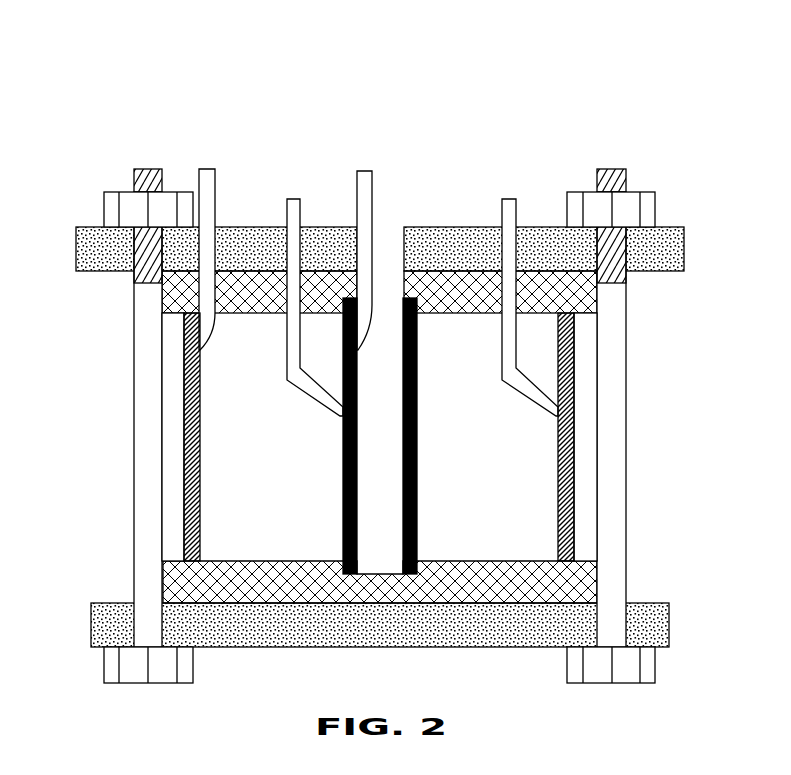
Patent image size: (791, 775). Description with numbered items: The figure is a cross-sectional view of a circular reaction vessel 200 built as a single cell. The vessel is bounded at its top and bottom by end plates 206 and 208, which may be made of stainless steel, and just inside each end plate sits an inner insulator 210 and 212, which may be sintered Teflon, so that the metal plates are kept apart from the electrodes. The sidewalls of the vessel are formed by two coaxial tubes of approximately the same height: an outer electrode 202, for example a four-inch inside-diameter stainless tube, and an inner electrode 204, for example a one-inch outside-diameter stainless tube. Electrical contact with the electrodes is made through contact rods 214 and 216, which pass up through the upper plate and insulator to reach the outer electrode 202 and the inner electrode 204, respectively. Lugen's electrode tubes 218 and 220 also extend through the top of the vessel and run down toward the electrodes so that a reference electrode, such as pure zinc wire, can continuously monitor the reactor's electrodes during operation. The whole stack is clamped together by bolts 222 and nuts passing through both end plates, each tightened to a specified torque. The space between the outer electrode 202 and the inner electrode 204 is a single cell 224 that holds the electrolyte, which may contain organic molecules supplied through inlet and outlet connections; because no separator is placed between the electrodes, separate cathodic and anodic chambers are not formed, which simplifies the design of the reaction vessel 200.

The circular reaction vessel 200 is at (205, 76).
The outer electrode 202 is at (202, 390).
The inner electrode 204 is at (343, 540).
The end plate 206 is at (578, 260).
The end plate 208 is at (579, 638).
The inner insulator 210 is at (471, 302).
The inner insulator 212 is at (484, 593).
The contact rod 214 is at (208, 162).
The contact rod 216 is at (363, 170).
The Lugen's electrode tube 218 is at (285, 207).
The Lugen's electrode tube 220 is at (517, 207).
The bolt 222 is at (133, 465).
The single cell 224 is at (262, 543).